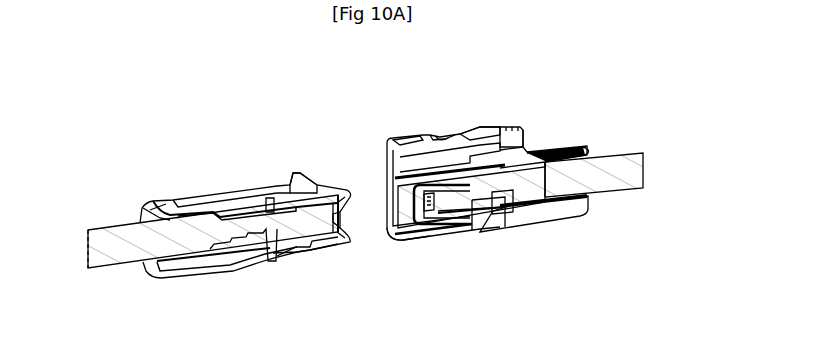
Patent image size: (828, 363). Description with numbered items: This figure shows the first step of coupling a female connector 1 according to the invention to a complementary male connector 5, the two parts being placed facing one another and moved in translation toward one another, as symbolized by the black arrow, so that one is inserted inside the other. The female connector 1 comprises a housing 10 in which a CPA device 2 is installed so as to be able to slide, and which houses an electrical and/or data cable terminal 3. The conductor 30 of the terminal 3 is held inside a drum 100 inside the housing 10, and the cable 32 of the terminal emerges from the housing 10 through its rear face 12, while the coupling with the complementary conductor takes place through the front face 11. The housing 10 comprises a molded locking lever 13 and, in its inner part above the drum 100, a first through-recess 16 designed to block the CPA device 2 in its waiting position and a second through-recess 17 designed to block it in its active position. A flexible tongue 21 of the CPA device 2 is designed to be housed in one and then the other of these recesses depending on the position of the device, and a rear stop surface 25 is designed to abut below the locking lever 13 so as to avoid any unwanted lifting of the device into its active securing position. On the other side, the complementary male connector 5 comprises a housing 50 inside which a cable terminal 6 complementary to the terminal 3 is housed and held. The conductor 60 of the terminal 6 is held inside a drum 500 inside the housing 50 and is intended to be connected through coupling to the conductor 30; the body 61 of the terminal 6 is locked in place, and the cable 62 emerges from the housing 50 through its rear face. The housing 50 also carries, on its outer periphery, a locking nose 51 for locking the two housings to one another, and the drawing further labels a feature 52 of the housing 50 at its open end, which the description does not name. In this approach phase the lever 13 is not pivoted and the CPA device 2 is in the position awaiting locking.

The female connector 1 is at (554, 128).
The CPA device 2 is at (477, 117).
The cable terminal 3 is at (556, 229).
The complementary male connector 5 is at (172, 173).
The cable terminal 6 is at (159, 284).
The housing 10 is at (493, 233).
The front face 11 is at (401, 242).
The rear face 12 is at (594, 152).
The locking lever 13 is at (389, 141).
The first through-recess 16 is at (475, 236).
The second through-recess 17 is at (443, 138).
The flexible tongue 21 is at (492, 138).
The stop surface 25 is at (525, 130).
The conductor 30 is at (452, 238).
The cable 32 is at (632, 178).
The housing 50 is at (236, 187).
The locking nose 51 is at (301, 184).
The end face 52 is at (345, 192).
The conductor 60 is at (298, 266).
The body 61 is at (222, 273).
The cable 62 is at (112, 258).
The drum 100 is at (426, 238).
The drum 500 is at (326, 257).